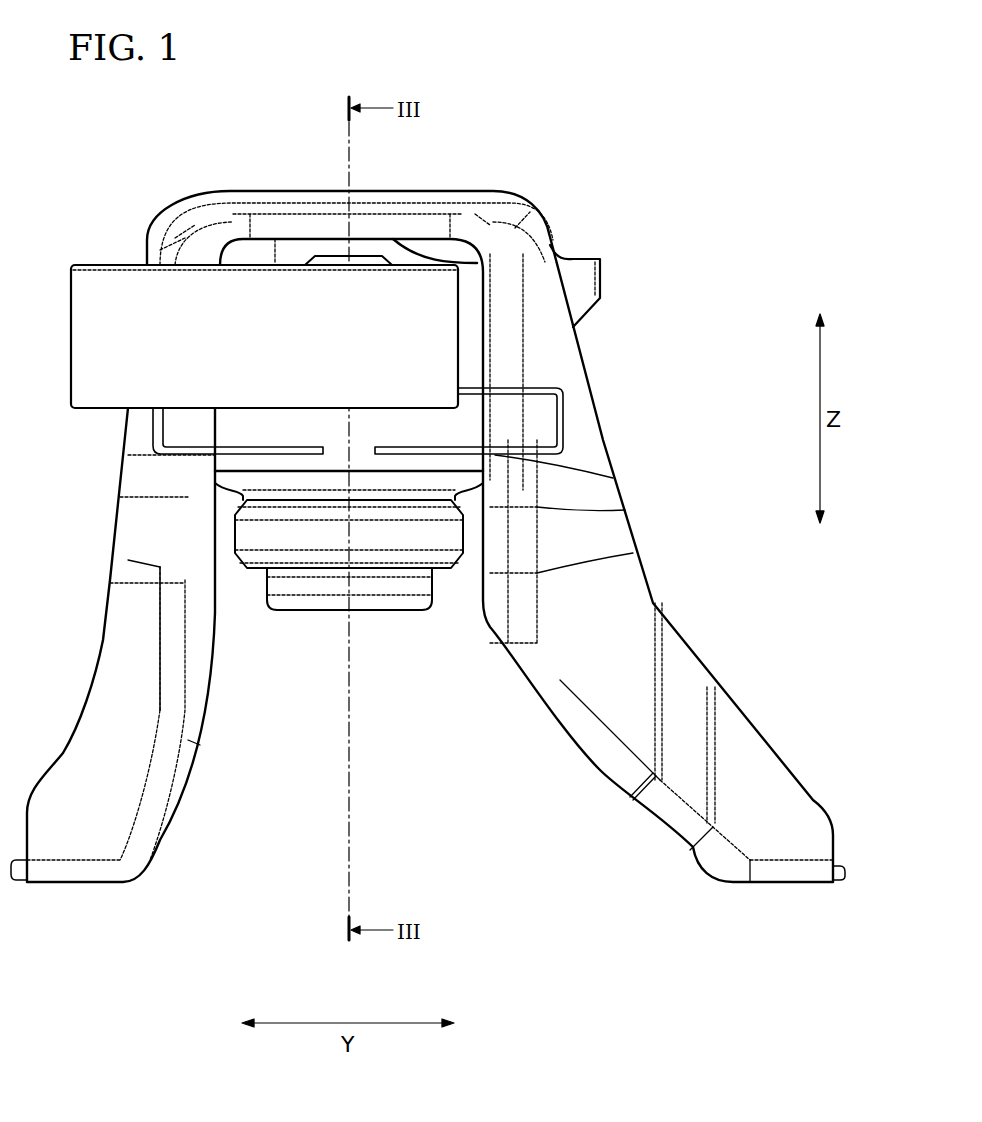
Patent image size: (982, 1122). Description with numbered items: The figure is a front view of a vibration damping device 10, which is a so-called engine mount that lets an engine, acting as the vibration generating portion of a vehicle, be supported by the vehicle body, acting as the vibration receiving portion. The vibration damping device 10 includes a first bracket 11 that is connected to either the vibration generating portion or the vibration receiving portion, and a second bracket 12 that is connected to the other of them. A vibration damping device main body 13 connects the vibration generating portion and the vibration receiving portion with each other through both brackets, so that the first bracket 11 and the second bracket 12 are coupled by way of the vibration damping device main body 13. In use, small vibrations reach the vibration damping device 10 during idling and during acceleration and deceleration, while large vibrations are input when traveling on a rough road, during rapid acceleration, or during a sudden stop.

The vibration damping device 10 is at (669, 138).
The first bracket 11 is at (624, 510).
The second bracket 12 is at (105, 263).
The vibration damping device main body 13 is at (413, 626).